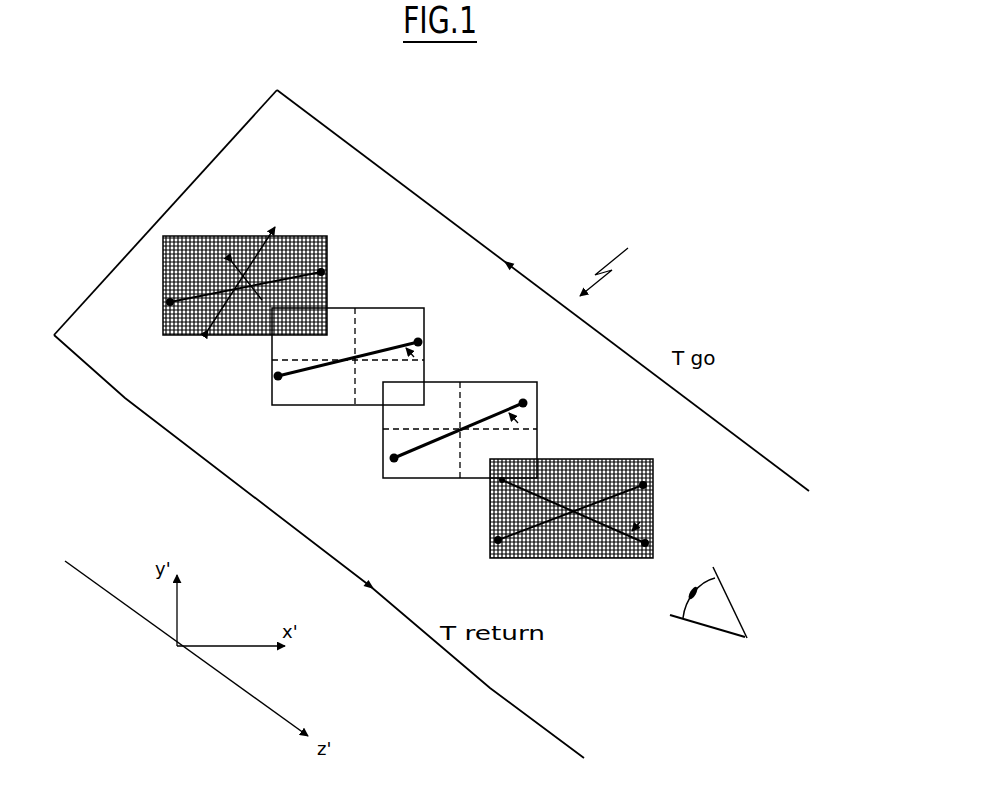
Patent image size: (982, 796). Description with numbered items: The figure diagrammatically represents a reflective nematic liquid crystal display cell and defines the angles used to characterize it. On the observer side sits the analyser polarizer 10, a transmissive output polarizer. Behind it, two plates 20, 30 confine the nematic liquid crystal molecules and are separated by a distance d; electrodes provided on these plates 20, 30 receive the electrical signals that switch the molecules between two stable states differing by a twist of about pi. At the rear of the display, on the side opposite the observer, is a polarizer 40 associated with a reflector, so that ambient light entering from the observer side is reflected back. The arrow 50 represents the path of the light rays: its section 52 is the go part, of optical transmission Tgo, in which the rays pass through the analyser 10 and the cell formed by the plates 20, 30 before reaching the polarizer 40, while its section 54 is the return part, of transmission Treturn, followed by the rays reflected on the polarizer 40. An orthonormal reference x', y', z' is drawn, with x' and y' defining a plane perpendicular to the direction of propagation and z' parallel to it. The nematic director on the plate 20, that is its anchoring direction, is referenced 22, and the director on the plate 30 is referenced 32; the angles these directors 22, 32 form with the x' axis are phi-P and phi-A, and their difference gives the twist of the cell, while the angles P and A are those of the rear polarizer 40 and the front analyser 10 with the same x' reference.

The analyser polarizer 10 is at (608, 459).
The plate 20 is at (491, 381).
The nematic director 22 is at (413, 453).
The plate 30 is at (395, 308).
The nematic director 32 is at (307, 373).
The polarizer associated with a reflector 40 is at (327, 252).
The arrow 50 is at (432, 203).
The section representing the go part 52 is at (615, 259).
The section representing the return part 54 is at (473, 670).